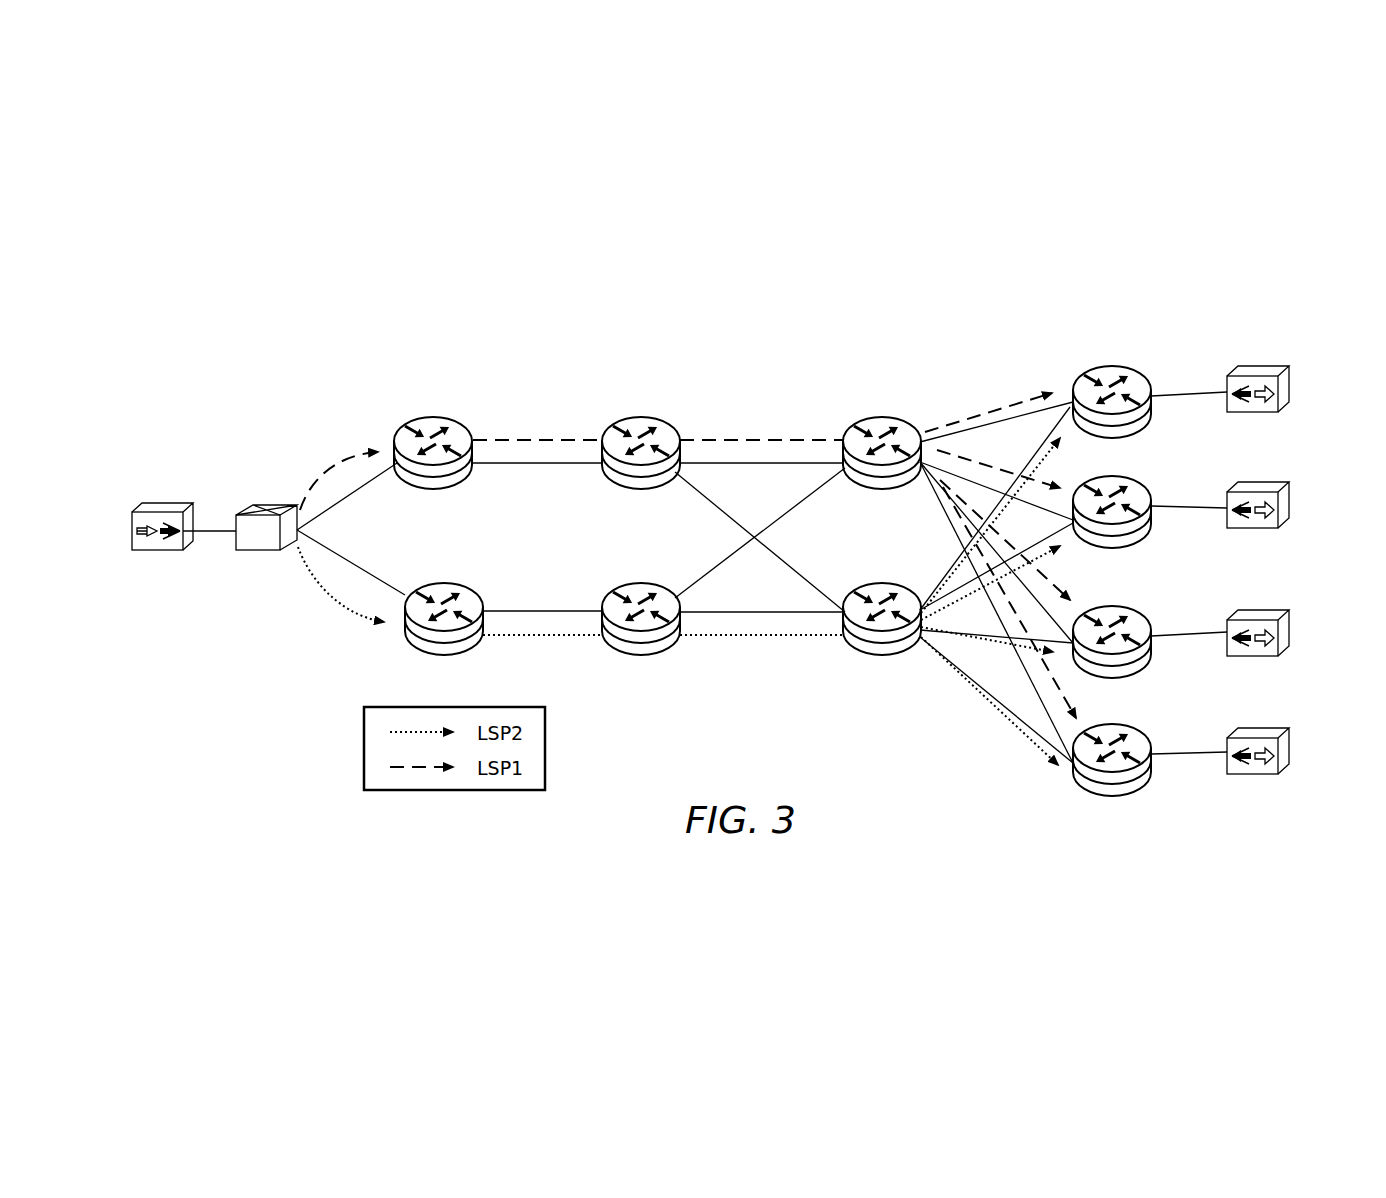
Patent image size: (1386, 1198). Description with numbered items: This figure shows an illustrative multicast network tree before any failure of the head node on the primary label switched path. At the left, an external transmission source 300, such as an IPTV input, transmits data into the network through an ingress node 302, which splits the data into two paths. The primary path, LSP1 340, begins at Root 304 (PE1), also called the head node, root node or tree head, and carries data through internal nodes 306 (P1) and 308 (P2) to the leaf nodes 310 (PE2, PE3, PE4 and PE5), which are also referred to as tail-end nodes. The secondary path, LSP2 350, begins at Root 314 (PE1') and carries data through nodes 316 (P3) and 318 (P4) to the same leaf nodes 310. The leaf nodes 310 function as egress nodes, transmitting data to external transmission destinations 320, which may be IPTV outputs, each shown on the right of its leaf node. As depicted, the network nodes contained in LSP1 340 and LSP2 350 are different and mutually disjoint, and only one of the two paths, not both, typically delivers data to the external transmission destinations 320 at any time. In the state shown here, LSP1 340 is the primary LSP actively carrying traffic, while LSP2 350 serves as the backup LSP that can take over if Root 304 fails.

The external transmission source 300 is at (178, 510).
The ingress node 302 is at (262, 552).
The Root (PE1) 304 is at (462, 420).
The internal node (P1) 306 is at (656, 418).
The internal node (P2) 308 is at (896, 418).
The leaf nodes (PE2, PE3, PE4 and PE5) 310 is at (1146, 418).
The Root (PE1') 314 is at (425, 652).
The node (P3) 316 is at (626, 652).
The node (P4) 318 is at (868, 652).
The external transmission destinations 320 is at (1290, 391).
The LSP1 340 is at (540, 440).
The LSP2 350 is at (552, 636).